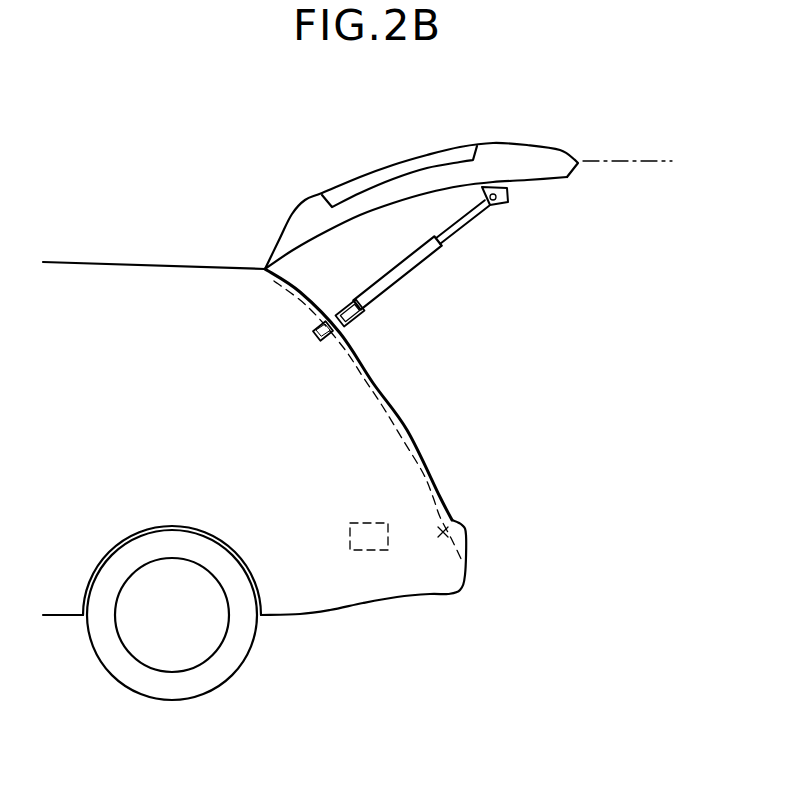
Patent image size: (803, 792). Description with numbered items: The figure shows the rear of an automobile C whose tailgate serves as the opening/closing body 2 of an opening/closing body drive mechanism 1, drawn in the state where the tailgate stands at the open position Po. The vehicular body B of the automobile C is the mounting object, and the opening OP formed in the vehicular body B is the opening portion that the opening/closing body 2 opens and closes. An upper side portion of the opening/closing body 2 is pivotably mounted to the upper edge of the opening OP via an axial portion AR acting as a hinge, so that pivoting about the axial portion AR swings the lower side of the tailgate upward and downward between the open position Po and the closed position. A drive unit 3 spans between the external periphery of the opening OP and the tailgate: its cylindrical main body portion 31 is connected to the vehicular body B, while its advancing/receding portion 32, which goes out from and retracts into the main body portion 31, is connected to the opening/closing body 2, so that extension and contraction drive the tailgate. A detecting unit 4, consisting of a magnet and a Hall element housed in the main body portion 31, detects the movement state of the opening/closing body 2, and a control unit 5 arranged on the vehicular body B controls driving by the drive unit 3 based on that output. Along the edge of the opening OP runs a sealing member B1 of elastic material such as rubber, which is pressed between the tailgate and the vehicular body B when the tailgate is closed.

The opening/closing body drive mechanism 1 is at (598, 233).
The opening/closing body 2 is at (527, 168).
The drive unit 3 is at (453, 297).
The main body portion 31 is at (407, 265).
The advancing/receding portion 32 is at (450, 237).
The detecting unit 4 is at (360, 318).
The control unit 5 is at (370, 520).
The automobile C is at (85, 249).
The vehicular body B is at (185, 280).
The sealing member B1 is at (468, 568).
The axial portion AR is at (265, 267).
The open position Po is at (650, 160).
The opening OP is at (452, 485).